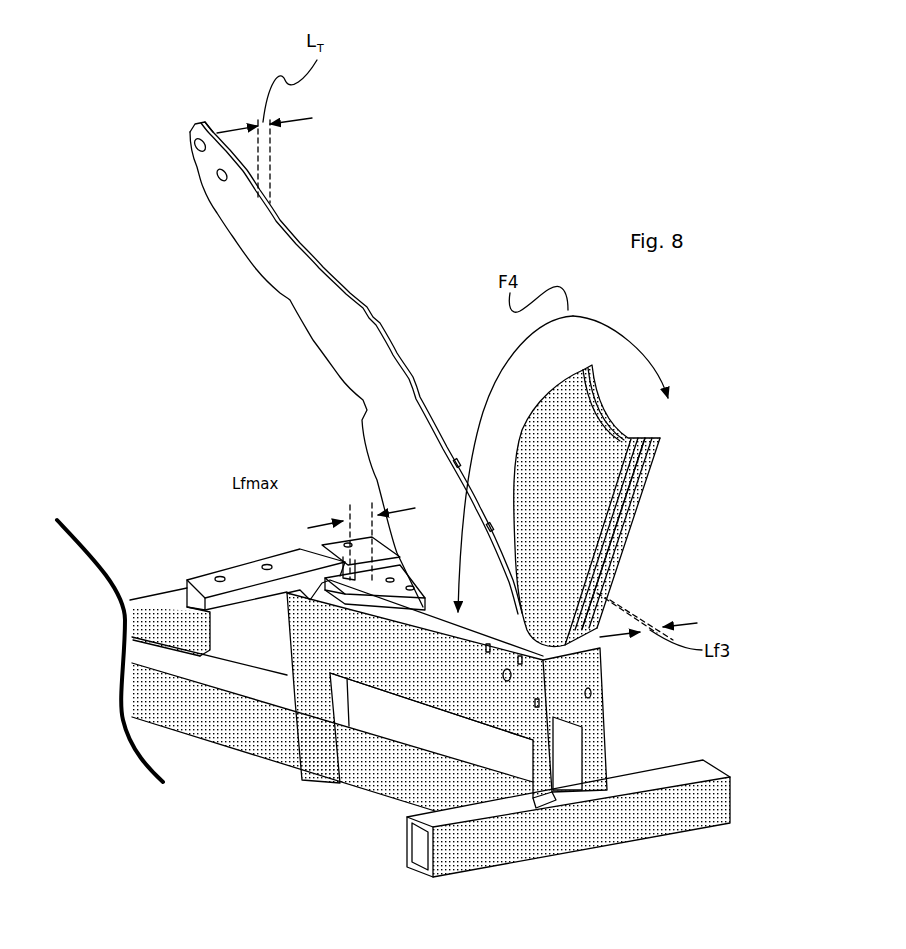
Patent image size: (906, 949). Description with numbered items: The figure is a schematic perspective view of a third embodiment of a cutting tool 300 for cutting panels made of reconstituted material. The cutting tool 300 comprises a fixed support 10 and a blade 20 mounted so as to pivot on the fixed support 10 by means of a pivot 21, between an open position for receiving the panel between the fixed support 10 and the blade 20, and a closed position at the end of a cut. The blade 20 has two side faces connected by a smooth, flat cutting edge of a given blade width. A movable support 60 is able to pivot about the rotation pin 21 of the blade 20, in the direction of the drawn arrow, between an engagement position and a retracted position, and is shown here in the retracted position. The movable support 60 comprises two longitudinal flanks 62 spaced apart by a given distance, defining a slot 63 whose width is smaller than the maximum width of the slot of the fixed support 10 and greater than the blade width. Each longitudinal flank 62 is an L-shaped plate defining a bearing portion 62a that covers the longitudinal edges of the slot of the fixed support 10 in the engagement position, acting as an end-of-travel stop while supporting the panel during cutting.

The fixed support 10 is at (347, 652).
The blade 20 is at (328, 368).
The pivot 21 is at (505, 675).
The movable support 60 is at (625, 506).
The longitudinal flank 62 is at (575, 457).
The bearing portion 62a is at (637, 503).
The slot 63 is at (611, 535).
The cutting tool 300 is at (417, 313).